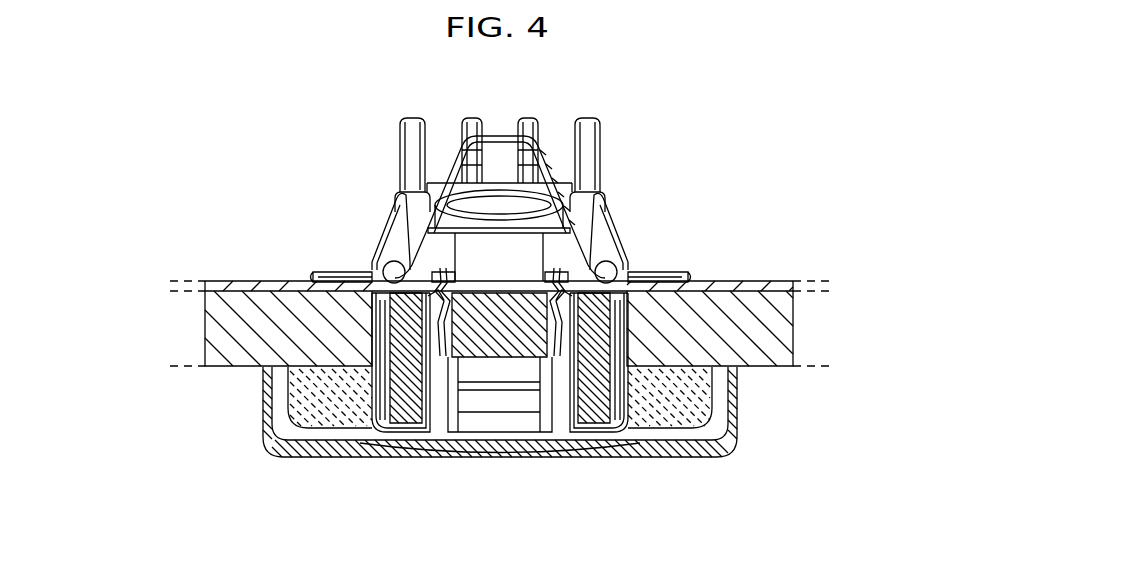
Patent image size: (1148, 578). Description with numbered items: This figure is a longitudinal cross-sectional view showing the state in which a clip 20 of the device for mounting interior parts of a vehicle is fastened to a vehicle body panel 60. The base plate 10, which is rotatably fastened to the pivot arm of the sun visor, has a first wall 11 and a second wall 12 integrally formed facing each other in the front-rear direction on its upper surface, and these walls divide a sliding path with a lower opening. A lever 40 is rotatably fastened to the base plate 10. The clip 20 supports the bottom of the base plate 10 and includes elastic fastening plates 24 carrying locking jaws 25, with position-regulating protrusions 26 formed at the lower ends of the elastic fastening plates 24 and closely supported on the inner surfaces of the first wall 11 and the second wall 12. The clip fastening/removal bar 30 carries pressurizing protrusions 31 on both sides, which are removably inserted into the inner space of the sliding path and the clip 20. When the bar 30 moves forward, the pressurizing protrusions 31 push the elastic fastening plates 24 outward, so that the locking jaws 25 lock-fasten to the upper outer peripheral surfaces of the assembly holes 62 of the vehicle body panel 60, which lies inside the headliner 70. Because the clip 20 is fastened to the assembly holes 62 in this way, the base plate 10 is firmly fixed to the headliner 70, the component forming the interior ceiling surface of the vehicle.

The base plate 10 is at (306, 404).
The first wall 11 is at (406, 440).
The second wall 12 is at (604, 435).
The clip 20 is at (448, 160).
The elastic fastening plate 24 is at (418, 235).
The locking jaw 25 is at (391, 268).
The position-regulating protrusion 26 is at (567, 300).
The clip fastening/removal bar 30 is at (522, 291).
The pressurizing protrusion 31 is at (511, 300).
The lever 40 is at (380, 460).
The vehicle body panel 60 is at (725, 281).
The assembly hole 62 is at (590, 255).
The headliner 70 is at (775, 368).